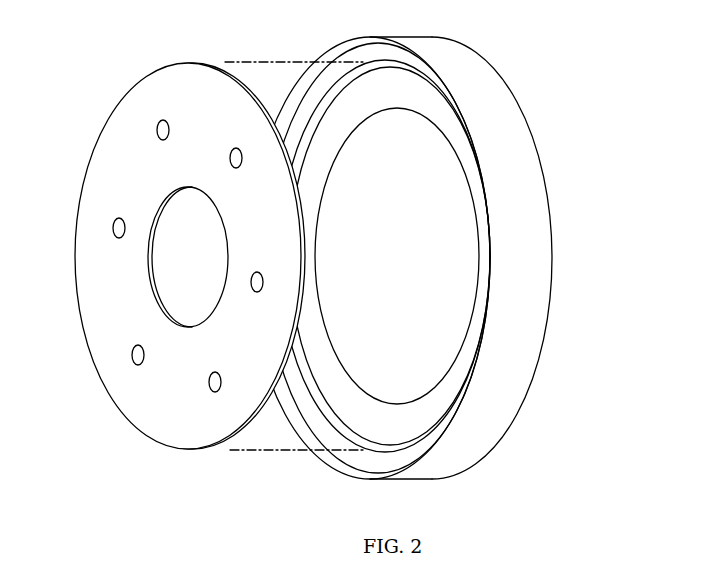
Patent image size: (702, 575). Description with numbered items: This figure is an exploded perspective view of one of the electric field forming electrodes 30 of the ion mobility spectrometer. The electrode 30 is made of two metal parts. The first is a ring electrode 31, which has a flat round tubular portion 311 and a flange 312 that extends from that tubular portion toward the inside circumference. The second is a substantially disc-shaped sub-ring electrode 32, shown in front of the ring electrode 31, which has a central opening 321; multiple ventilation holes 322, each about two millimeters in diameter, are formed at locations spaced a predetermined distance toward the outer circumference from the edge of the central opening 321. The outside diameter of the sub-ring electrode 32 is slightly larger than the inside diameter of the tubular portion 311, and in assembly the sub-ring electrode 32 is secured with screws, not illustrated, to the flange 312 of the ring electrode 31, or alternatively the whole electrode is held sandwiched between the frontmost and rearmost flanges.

The electric field forming electrode 30 is at (319, 240).
The ring electrode 31 is at (410, 240).
The flat round tubular portion 311 is at (378, 38).
The flange 312 is at (345, 105).
The sub-ring electrode 32 is at (164, 256).
The central opening 321 is at (165, 221).
The ventilation holes 322 is at (113, 223).